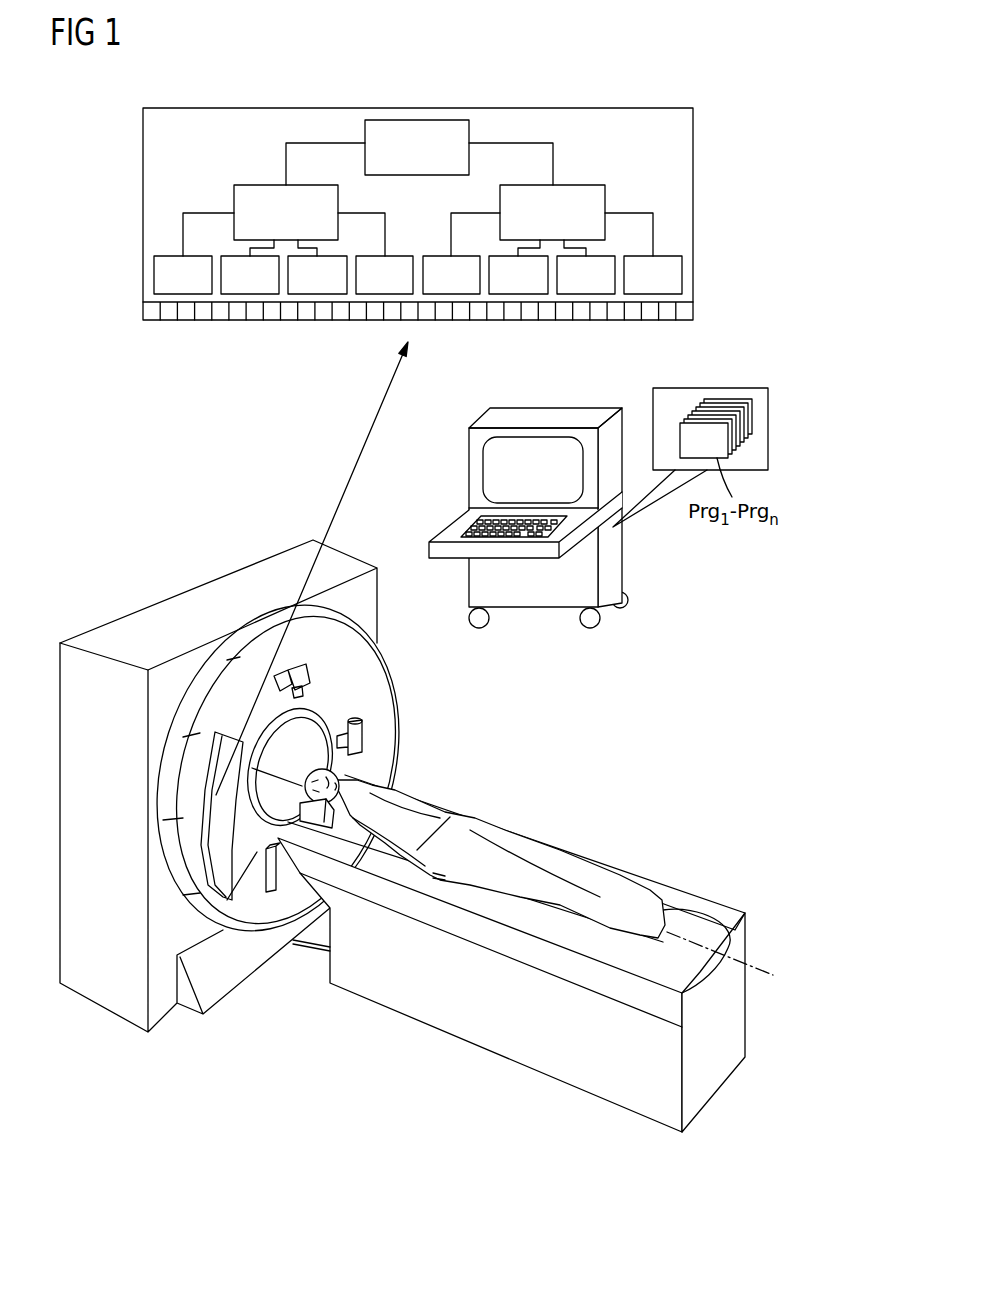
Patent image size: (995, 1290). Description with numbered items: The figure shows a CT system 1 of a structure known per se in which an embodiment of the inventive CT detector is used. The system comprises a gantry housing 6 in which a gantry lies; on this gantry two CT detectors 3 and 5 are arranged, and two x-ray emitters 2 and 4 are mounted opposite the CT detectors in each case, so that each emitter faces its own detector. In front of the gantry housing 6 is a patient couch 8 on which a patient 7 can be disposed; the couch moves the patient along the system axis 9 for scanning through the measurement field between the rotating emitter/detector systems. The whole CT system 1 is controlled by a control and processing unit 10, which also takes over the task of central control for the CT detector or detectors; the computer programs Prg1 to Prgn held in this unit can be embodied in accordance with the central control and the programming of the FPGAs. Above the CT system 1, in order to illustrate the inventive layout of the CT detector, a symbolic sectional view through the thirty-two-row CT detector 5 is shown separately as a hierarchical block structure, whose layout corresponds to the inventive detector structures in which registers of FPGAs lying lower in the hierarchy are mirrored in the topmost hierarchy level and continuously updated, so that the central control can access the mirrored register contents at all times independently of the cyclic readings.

The CT system 1 is at (138, 521).
The X-ray emitter 2 is at (307, 672).
The Detector 3 is at (280, 875).
The X-ray emitter 4 is at (363, 731).
The Detector 5 is at (691, 81).
The Gantry housing 6 is at (85, 972).
The Patient 7 is at (412, 808).
The Patient couch 8 is at (642, 1093).
The System axis 9 is at (763, 972).
The Control and processing unit 10 is at (613, 574).